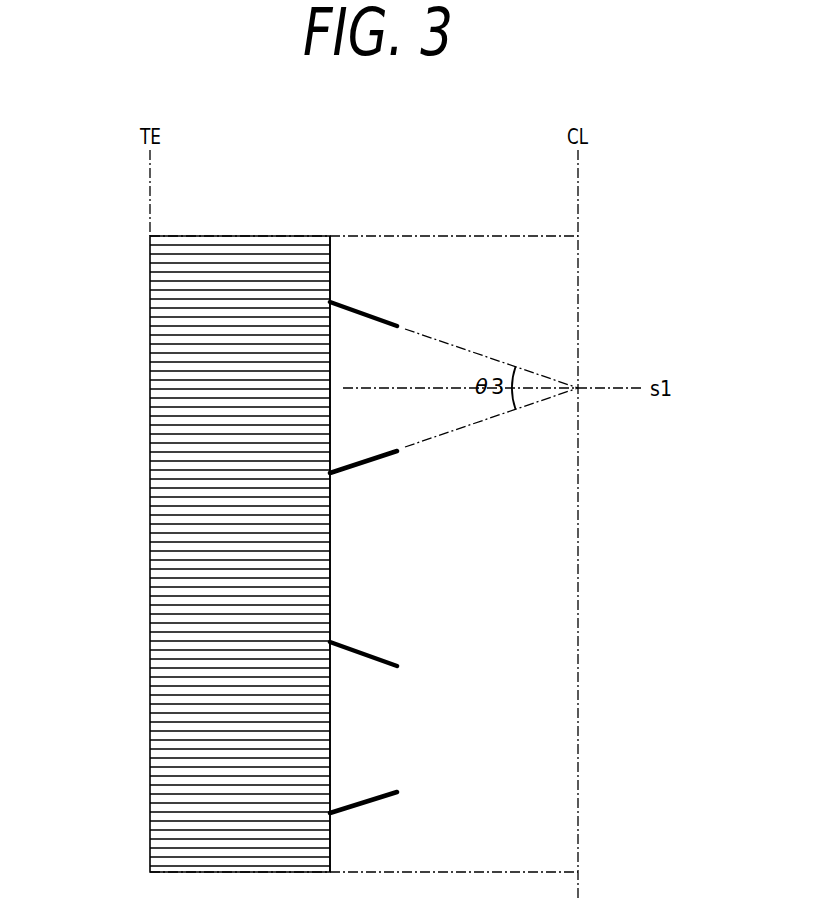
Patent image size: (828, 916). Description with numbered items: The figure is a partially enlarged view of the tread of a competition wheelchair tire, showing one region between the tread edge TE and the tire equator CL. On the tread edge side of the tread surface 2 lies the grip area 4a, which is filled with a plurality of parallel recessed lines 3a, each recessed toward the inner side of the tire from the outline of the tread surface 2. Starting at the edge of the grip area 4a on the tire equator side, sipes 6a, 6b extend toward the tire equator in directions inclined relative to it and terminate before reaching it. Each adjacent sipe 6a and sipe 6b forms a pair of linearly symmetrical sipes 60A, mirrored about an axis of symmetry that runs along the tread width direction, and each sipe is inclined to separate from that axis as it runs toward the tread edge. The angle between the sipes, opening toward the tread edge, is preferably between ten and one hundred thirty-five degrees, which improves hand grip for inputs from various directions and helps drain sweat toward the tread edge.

The tread surface 2 is at (150, 326).
The recessed line 3a is at (216, 544).
The grip area 4a is at (228, 720).
The sipe 6a is at (363, 313).
The sipe 6b is at (370, 465).
The pair of linearly symmetrical sipes 60A is at (398, 565).